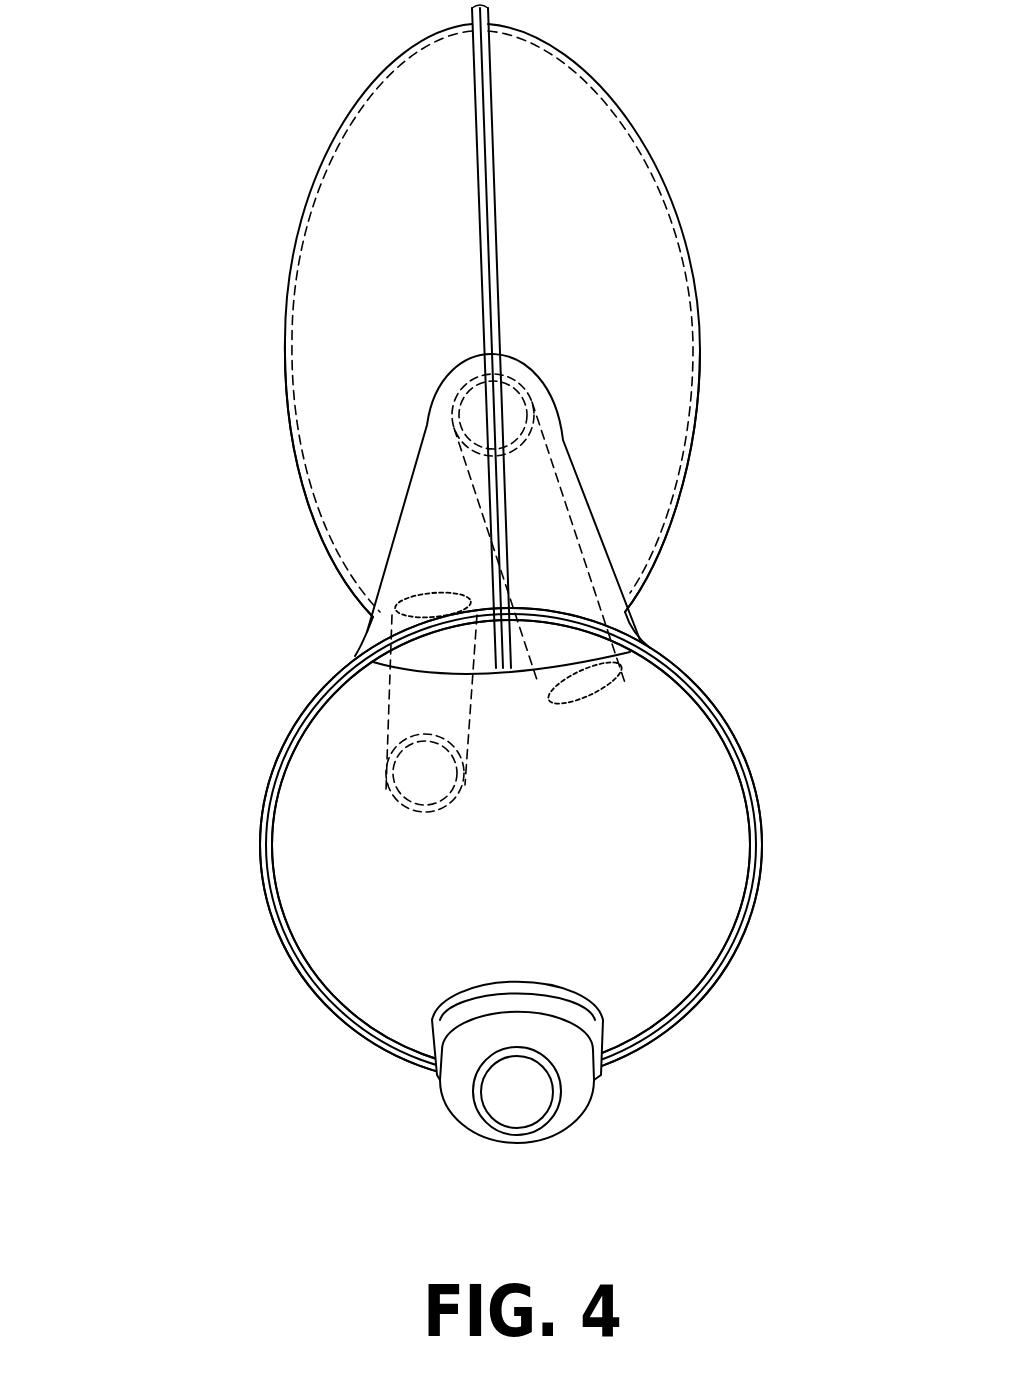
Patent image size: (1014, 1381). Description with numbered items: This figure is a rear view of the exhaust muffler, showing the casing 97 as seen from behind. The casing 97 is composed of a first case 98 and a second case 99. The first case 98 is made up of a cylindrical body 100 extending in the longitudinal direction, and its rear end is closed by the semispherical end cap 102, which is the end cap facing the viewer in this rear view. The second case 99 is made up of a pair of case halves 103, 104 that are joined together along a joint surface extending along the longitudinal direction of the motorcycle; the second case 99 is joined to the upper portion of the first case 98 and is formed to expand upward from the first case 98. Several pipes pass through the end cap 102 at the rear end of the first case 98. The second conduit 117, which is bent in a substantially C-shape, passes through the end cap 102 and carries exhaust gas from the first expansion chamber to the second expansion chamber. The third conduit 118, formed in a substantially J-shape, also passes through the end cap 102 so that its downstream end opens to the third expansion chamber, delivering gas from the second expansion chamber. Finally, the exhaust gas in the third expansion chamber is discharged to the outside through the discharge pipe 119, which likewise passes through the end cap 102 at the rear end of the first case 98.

The casing 97 is at (131, 471).
The first case 98 is at (313, 678).
The second case 99 is at (292, 465).
The cylindrical body 100 is at (740, 747).
The end cap 102 is at (716, 815).
The case half 103 is at (700, 310).
The case half 104 is at (328, 325).
The second conduit 117 is at (473, 695).
The third conduit 118 is at (585, 543).
The discharge pipe 119 is at (555, 1127).